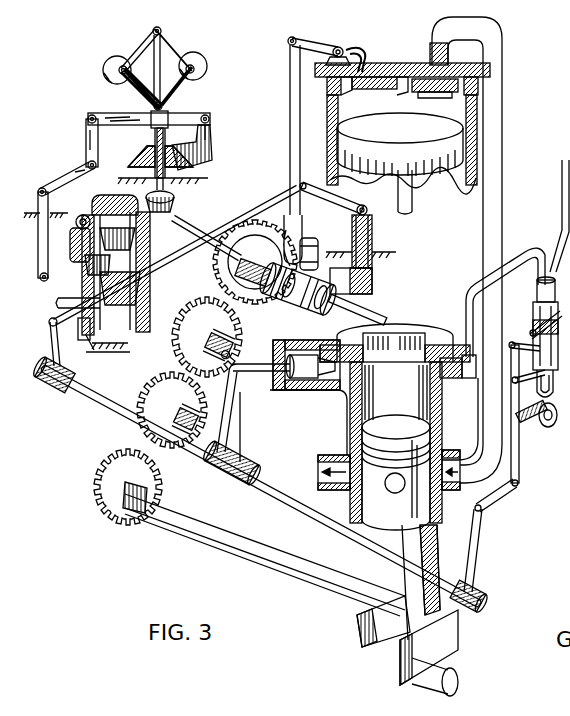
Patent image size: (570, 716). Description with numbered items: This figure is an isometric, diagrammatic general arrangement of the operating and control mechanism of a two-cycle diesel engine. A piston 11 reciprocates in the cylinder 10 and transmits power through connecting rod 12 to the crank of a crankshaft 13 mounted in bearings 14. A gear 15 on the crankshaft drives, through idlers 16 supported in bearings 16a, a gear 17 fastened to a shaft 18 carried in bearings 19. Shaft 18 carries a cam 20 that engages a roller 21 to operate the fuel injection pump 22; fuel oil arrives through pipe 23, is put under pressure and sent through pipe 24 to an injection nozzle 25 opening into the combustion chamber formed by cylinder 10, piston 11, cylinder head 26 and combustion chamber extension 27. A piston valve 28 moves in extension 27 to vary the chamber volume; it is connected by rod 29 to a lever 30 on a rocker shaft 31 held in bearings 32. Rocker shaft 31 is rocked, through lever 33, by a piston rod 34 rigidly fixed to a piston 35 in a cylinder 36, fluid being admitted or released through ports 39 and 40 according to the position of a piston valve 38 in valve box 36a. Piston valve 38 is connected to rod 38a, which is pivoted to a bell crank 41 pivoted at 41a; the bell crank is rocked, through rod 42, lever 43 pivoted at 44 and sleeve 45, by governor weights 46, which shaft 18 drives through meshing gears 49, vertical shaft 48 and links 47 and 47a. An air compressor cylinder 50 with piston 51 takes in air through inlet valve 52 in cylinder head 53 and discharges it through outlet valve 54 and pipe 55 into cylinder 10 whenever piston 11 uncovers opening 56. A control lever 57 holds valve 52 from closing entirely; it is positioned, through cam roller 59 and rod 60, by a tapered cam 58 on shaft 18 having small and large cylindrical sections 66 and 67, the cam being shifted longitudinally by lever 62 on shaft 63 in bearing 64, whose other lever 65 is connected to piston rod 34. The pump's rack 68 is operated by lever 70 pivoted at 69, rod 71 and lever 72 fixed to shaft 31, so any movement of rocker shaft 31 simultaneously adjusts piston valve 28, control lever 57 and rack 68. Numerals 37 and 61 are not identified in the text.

The cylinder 10 is at (440, 398).
The piston 11 is at (381, 498).
The connecting rod 12 is at (438, 560).
The crankshaft 13 is at (236, 546).
The bearings 14 is at (145, 518).
The gear 15 is at (140, 477).
The idlers 16 is at (223, 332).
The bearings 16a is at (232, 342).
The gear 17 is at (266, 253).
The shaft 18 is at (356, 310).
The bearings 19 is at (188, 218).
The cam 20 is at (554, 422).
The roller 21 is at (553, 383).
The fuel injection pump 22 is at (535, 296).
The pipe 23 is at (563, 218).
The pipe 24 is at (464, 296).
The injection nozzle 25 is at (462, 378).
The cylinder head 26 is at (410, 326).
The combustion chamber extension 27 is at (326, 348).
The piston valve 28 is at (296, 388).
The rod 29 is at (255, 372).
The lever 30 is at (230, 416).
The rocker shaft 31 is at (315, 470).
The bearings 32 is at (62, 388).
The lever 33 is at (48, 340).
The piston rod 34 is at (178, 258).
The piston 35 is at (114, 343).
The cylinder 36 is at (88, 356).
The valve box 36a is at (80, 216).
The shaft 37 is at (142, 298).
The piston valve 38 is at (118, 200).
The rod 38a is at (70, 244).
The port 39 is at (136, 236).
The port 40 is at (141, 286).
The bell crank 41 is at (75, 170).
The pivot 41a is at (70, 174).
The rod 42 is at (86, 138).
The lever 43 is at (118, 115).
The pivot 44 is at (210, 113).
The sleeve 45 is at (166, 108).
The governor weights 46 is at (108, 62).
The links 47 is at (147, 40).
The lower links 47a is at (145, 90).
The vertical shaft 48 is at (172, 134).
The meshing gears 49 is at (172, 200).
The air compressor cylinder 50 is at (442, 181).
The piston 51 is at (426, 136).
The inlet valve 52 is at (402, 140).
The cylinder head 53 is at (388, 66).
The outlet valve 54 is at (432, 97).
The pipe 55 is at (483, 236).
The opening 56 is at (450, 489).
The control lever 57 is at (364, 48).
The tapered cam 58 is at (300, 302).
The cam roller 59 is at (316, 254).
The rod 60 is at (288, 106).
The lever 61 is at (340, 47).
The lever 62 is at (373, 280).
The shaft 63 is at (366, 207).
The bearing 64 is at (373, 238).
The lever 65 is at (324, 198).
The cylindrical section 66 is at (278, 294).
The cylindrical section 67 is at (324, 312).
The rack 68 is at (528, 333).
The pivot 69 is at (540, 352).
The lever 70 is at (520, 468).
The rod 71 is at (494, 504).
The lever 72 is at (476, 550).